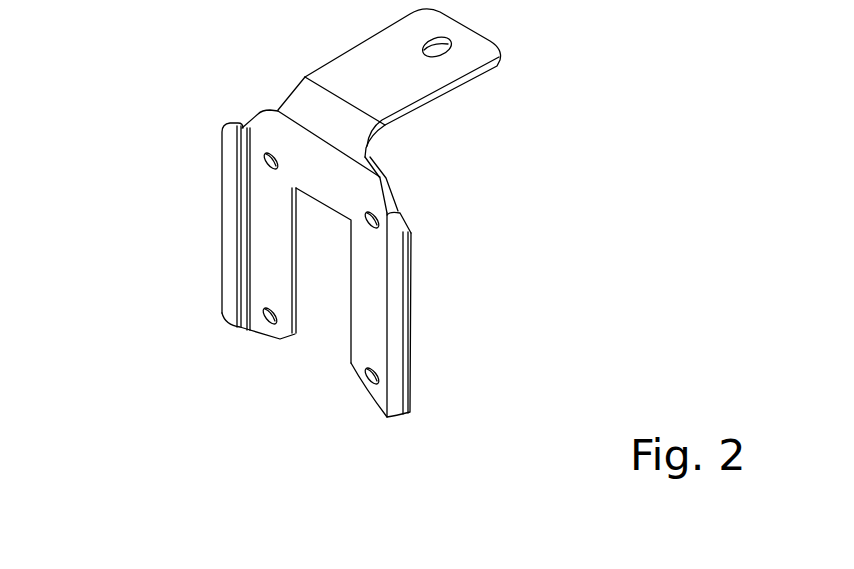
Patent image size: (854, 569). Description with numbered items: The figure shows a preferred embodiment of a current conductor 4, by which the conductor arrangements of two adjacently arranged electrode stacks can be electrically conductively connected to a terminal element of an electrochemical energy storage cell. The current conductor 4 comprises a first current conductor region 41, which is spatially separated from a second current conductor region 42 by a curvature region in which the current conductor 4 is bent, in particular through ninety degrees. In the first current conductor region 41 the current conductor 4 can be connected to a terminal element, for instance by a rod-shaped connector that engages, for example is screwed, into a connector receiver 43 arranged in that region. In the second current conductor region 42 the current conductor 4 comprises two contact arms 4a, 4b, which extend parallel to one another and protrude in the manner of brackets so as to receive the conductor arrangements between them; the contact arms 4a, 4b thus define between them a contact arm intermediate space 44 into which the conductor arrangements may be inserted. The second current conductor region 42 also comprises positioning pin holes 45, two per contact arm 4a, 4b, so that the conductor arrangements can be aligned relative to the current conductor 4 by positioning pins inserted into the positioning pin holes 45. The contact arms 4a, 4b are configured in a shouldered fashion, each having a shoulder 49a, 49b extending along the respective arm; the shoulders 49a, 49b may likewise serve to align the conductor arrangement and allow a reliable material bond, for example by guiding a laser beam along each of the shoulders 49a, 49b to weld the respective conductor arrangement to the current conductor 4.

The current conductor 4 is at (331, 258).
The first current conductor region 41 is at (444, 109).
The second current conductor region 42 is at (363, 277).
The connector receiver 43 is at (448, 48).
The contact arm intermediate space 44 is at (340, 295).
The positioning pin holes 45 is at (272, 172).
The shoulder 49a is at (400, 214).
The shoulder 49b is at (242, 128).
The contact arm 4a is at (388, 418).
The contact arm 4b is at (277, 331).